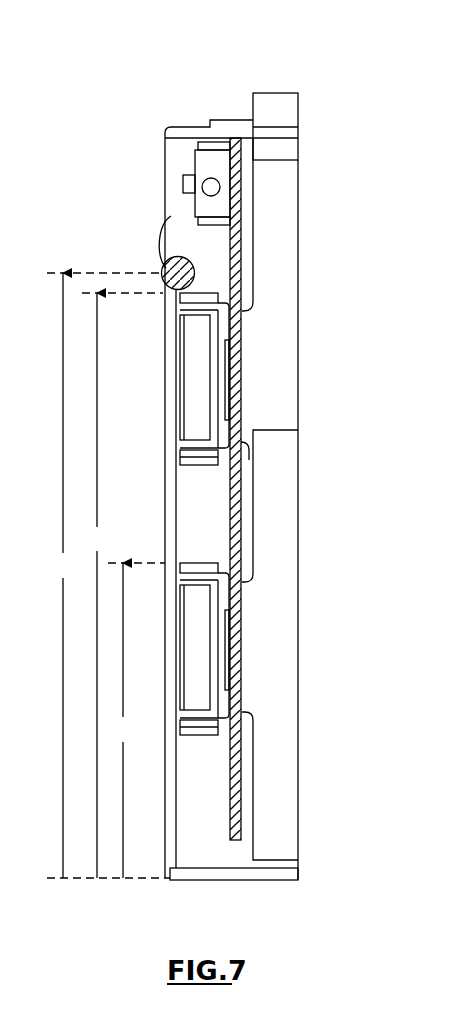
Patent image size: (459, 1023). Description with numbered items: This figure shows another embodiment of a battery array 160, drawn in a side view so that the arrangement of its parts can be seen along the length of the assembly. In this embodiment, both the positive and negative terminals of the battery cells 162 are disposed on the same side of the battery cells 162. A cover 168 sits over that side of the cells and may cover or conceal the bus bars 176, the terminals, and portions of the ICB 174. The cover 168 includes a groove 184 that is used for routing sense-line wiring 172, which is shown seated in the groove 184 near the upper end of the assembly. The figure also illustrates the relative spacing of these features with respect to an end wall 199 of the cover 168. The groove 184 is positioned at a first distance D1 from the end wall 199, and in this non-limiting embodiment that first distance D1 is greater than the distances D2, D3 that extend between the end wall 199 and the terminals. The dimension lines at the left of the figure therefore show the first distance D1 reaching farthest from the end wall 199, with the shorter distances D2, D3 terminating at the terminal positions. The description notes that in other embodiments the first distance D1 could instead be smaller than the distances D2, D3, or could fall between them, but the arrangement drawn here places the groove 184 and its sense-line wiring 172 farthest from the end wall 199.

The battery array 160 is at (219, 75).
The battery cells 162 is at (290, 305).
The cover 168 is at (172, 173).
The sense-line wiring 172 is at (163, 268).
The ICB 174 is at (235, 500).
The bus bars 176 is at (193, 420).
The groove 184 is at (197, 247).
The end wall 199 is at (217, 873).
The first distance D1 is at (108, 575).
The distance D2 is at (122, 585).
The distance D3 is at (136, 720).